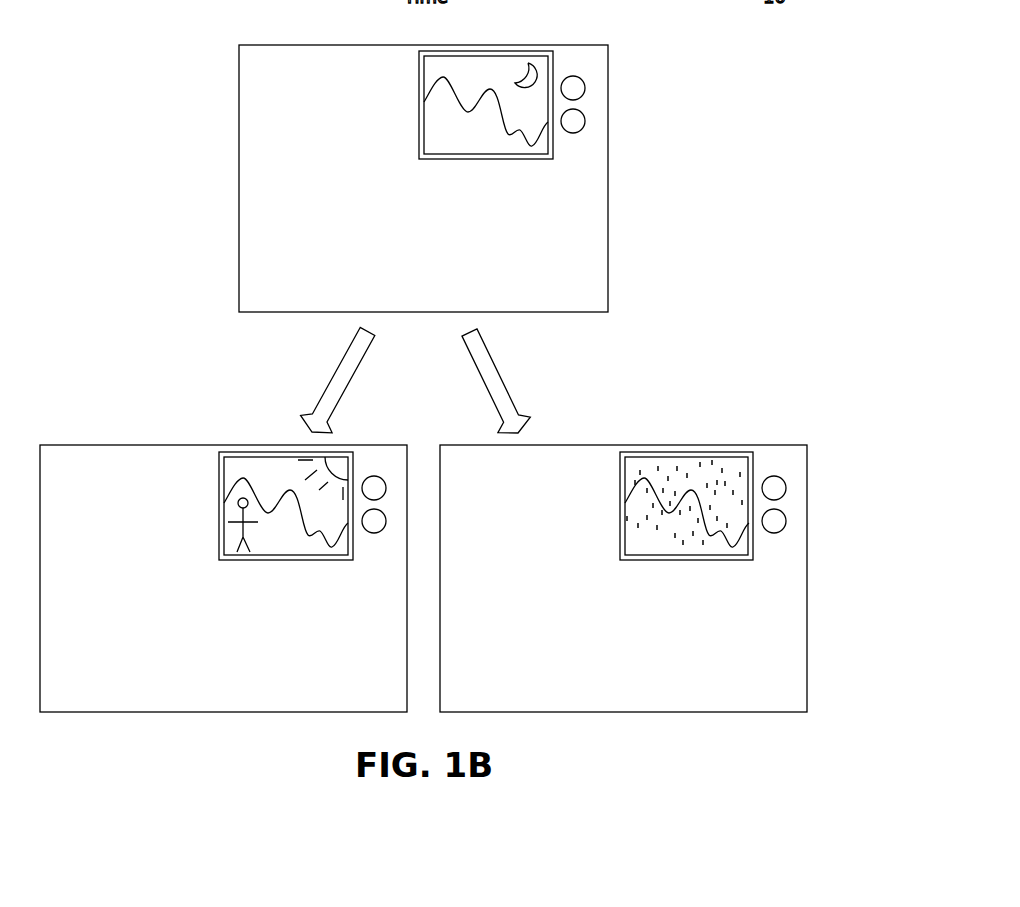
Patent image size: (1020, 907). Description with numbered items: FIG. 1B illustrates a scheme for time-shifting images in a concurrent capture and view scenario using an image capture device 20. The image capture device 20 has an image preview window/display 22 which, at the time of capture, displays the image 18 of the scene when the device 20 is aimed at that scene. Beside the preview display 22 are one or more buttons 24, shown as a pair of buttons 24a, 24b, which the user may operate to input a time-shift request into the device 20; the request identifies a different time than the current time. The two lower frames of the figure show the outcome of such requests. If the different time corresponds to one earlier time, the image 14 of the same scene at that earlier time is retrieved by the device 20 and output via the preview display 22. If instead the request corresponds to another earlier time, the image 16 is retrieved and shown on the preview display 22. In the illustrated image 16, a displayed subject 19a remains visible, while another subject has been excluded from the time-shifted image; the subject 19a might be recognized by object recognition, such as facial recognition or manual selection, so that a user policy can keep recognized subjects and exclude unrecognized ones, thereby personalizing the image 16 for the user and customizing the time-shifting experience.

The image 14 is at (686, 556).
The image 16 is at (265, 544).
The digital image 18 is at (490, 154).
The displayed subject 19a is at (242, 522).
The image capture device 20 is at (239, 112).
The image preview window/display 22 is at (419, 120).
The buttons 24 is at (626, 129).
The button 24a is at (585, 88).
The button 24b is at (573, 146).